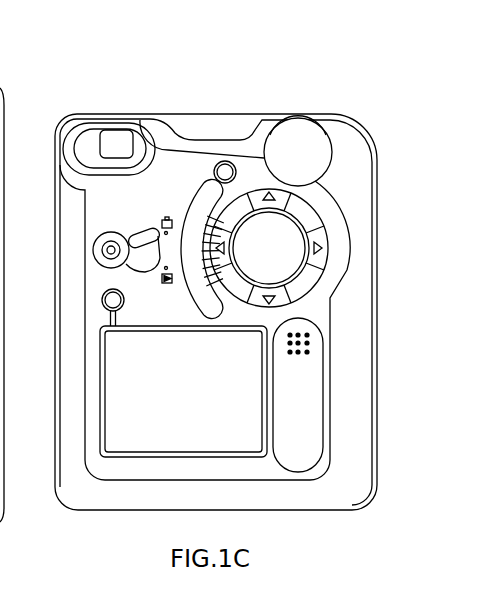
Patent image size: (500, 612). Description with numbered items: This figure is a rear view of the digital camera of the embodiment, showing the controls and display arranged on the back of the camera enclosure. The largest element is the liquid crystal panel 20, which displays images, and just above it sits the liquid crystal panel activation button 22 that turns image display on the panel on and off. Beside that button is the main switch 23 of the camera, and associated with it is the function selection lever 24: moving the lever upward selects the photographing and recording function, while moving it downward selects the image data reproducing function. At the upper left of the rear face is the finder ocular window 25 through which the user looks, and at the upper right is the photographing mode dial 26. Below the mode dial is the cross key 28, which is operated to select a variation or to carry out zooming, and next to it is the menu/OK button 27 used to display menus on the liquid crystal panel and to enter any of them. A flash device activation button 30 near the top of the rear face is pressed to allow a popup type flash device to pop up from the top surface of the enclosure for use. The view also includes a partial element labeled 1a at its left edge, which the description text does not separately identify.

The camera body 1a is at (17, 305).
The liquid crystal panel 20 is at (172, 432).
The liquid crystal panel activation button 22 is at (102, 300).
The main switch 23 is at (107, 250).
The function selection lever 24 is at (136, 235).
The finder ocular window 25 is at (110, 145).
The photographing mode dial 26 is at (309, 146).
The menu/OK button 27 is at (186, 284).
The cross key 28 is at (342, 265).
The flash device activation button 30 is at (235, 166).